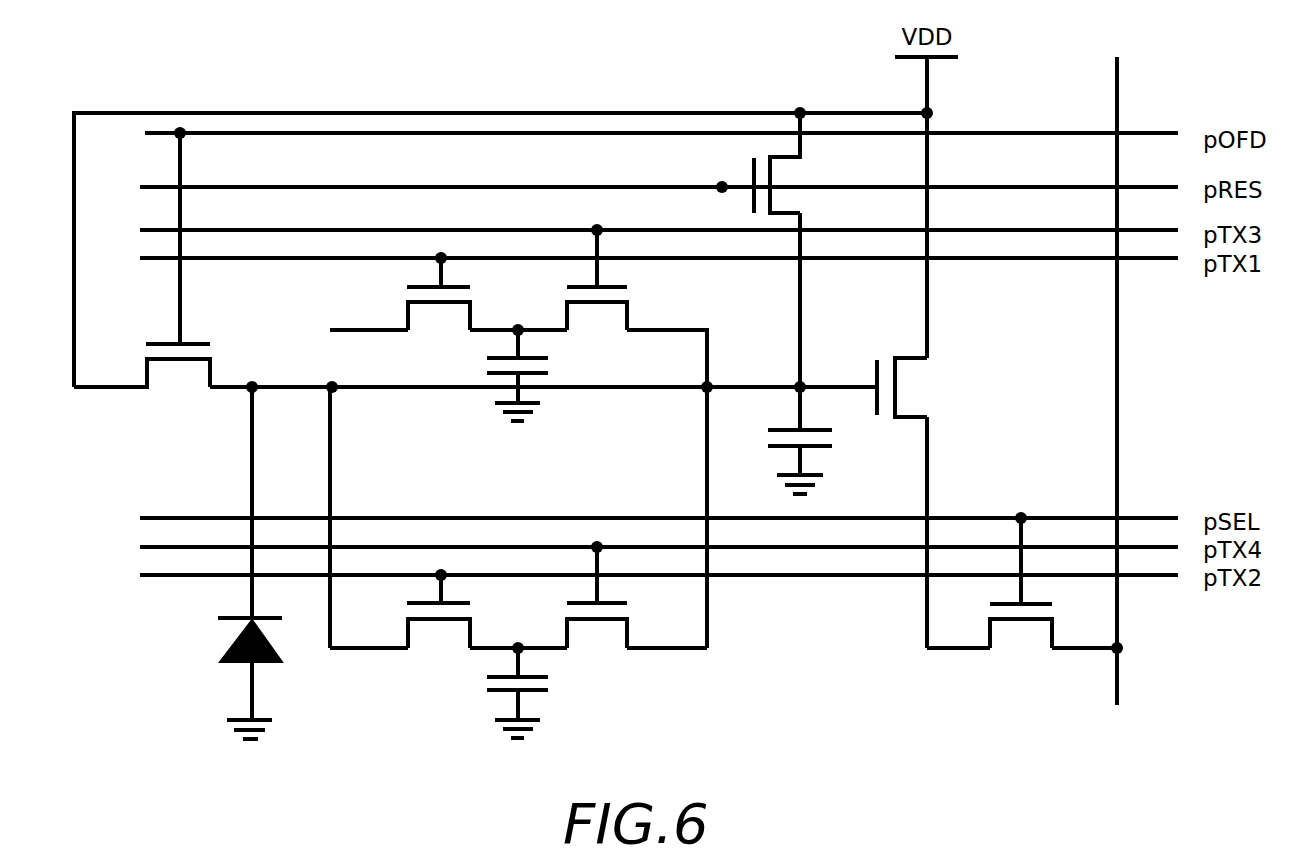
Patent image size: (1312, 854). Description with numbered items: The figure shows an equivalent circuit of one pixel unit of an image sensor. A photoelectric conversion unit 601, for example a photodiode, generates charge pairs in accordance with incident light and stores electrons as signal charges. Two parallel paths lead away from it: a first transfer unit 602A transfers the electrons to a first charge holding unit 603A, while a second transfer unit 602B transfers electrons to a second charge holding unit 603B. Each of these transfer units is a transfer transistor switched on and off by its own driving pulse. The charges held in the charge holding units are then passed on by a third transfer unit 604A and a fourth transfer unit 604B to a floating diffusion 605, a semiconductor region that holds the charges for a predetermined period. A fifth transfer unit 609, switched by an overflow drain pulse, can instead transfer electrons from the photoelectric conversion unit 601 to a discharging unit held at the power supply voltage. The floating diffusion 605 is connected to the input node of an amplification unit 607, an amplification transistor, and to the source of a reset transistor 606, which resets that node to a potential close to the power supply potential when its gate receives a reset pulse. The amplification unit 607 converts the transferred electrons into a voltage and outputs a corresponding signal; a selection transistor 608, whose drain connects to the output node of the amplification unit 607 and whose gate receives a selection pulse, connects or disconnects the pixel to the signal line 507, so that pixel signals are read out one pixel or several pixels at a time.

The signal line 507 is at (1118, 375).
The photoelectric conversion unit 601 is at (220, 652).
The transfer unit 602A is at (438, 316).
The transfer unit 602B is at (437, 634).
The charge holding unit 603A is at (503, 378).
The charge holding unit 603B is at (503, 695).
The transfer unit 604A is at (593, 317).
The transfer unit 604B is at (600, 634).
The floating diffusion 605 is at (785, 450).
The reset transistor 606 is at (770, 148).
The amplification unit 607 is at (915, 375).
The selection transistor 608 is at (1018, 632).
The transfer unit 609 is at (172, 370).